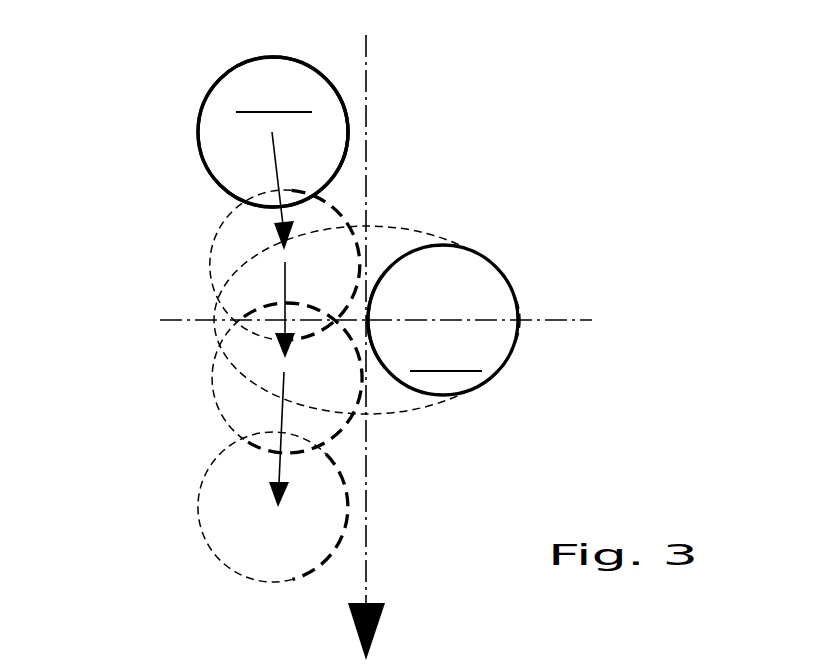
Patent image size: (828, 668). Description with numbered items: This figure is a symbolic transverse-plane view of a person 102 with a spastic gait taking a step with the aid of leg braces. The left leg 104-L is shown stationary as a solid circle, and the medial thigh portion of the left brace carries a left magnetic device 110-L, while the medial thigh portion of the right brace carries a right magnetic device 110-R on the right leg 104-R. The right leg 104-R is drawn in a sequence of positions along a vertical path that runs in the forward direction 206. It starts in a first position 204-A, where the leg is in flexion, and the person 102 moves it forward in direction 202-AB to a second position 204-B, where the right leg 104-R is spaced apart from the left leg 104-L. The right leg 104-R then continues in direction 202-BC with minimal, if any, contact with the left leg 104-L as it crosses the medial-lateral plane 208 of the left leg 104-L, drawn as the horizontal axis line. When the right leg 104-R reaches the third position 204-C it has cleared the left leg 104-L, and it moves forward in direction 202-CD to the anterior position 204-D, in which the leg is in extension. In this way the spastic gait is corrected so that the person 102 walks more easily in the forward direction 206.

The person 102 is at (433, 235).
The right leg 104-R is at (273, 132).
The left leg 104-L is at (443, 320).
The right magnetic device 110-R is at (348, 103).
The left magnetic device 110-L is at (370, 302).
The direction from first position to second position 202-AB is at (277, 171).
The direction from second position to third position 202-BC is at (280, 312).
The direction from third position to anterior position 202-CD is at (273, 462).
The first position 204-A is at (197, 135).
The second position 204-B is at (210, 258).
The third position 204-C is at (212, 380).
The anterior position 204-D is at (197, 515).
The forward direction 206 is at (366, 565).
The medial-lateral plane 208 is at (552, 320).